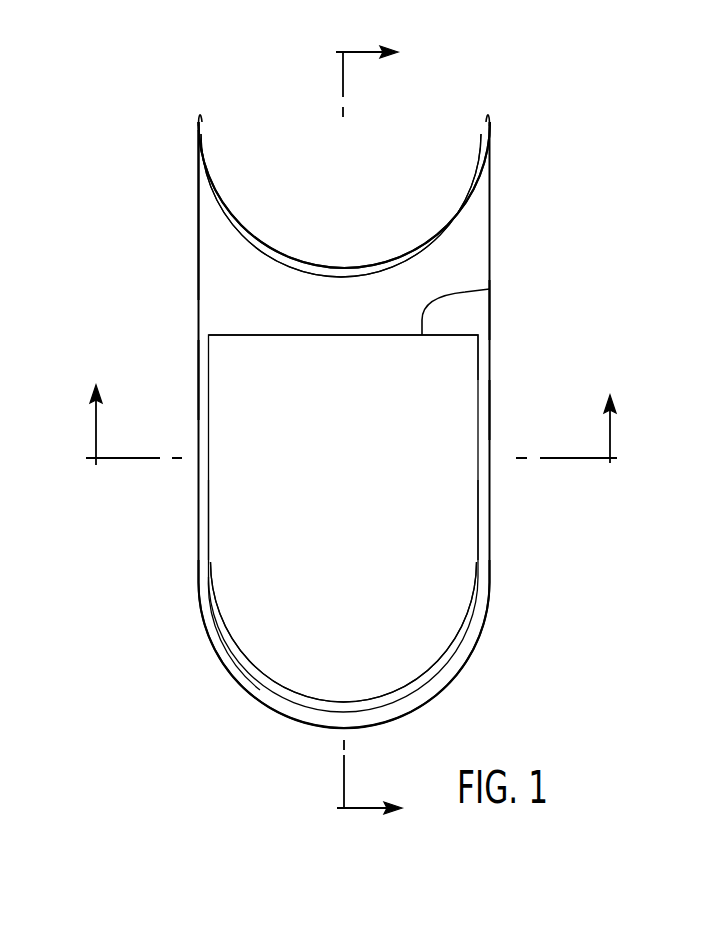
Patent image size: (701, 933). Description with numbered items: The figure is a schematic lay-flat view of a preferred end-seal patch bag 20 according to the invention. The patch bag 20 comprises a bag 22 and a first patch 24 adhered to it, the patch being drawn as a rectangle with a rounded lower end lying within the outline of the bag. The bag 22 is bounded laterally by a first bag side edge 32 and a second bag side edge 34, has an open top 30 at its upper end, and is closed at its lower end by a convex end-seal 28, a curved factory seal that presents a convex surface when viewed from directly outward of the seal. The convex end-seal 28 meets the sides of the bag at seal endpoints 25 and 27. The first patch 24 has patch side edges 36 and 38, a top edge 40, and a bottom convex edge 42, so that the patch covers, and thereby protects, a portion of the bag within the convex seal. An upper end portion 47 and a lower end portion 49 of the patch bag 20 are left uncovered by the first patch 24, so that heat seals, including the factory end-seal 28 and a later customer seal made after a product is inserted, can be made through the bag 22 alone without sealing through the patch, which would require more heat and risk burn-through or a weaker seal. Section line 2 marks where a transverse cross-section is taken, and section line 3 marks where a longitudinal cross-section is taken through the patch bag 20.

The patch bag 20 is at (92, 113).
The bag 22 is at (467, 307).
The first patch 24 is at (447, 363).
The seal endpoint 25 is at (197, 573).
The seal endpoint 27 is at (490, 578).
The convex end-seal 28 is at (452, 662).
The open top 30 is at (450, 222).
The first bag side edge 32 is at (198, 382).
The second bag side edge 34 is at (490, 403).
The patch side edge 36 is at (210, 510).
The patch side edge 38 is at (478, 513).
The top edge 40 is at (490, 289).
The bottom convex edge 42 is at (232, 646).
The upper end portion 47 is at (229, 265).
The lower end portion 49 is at (478, 603).
The section 2— 2 is at (352, 425).
The section 3— 3 is at (369, 432).